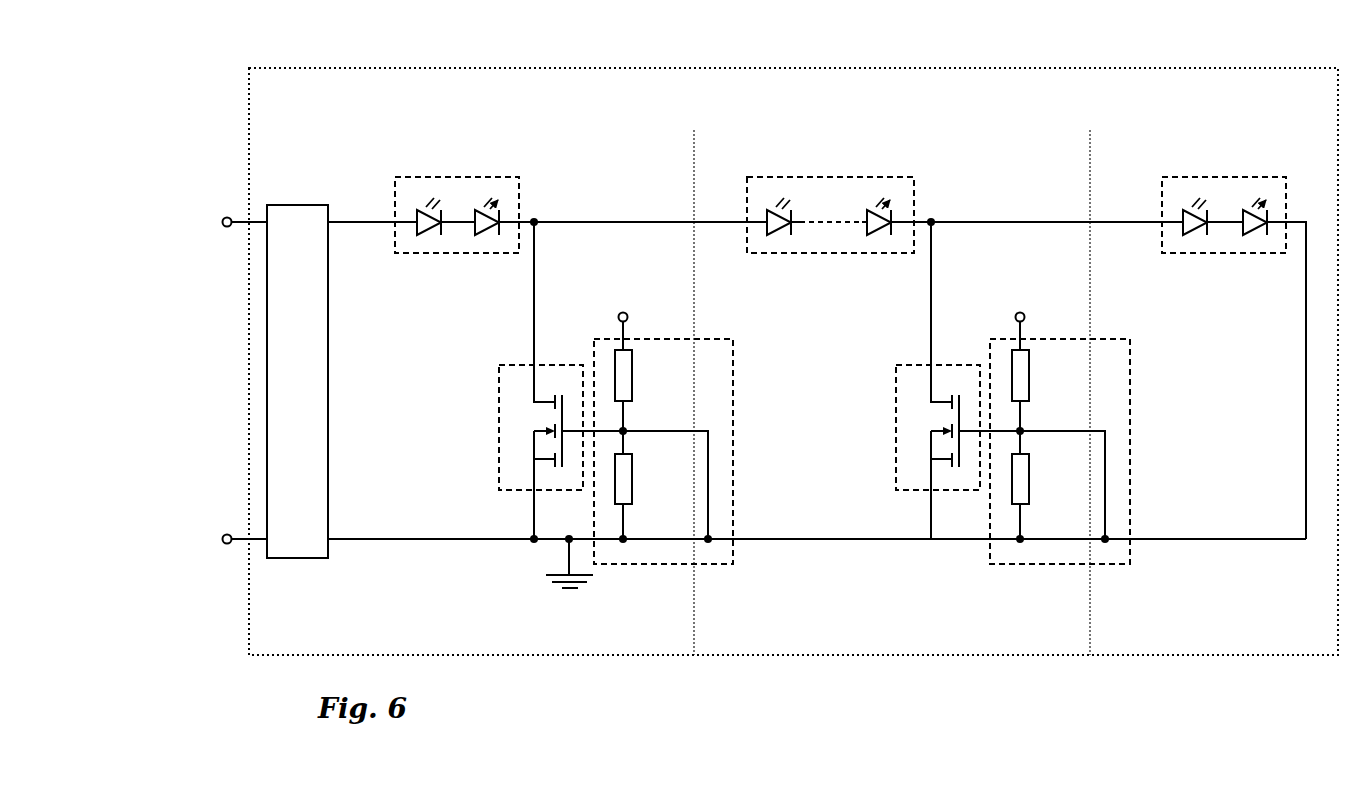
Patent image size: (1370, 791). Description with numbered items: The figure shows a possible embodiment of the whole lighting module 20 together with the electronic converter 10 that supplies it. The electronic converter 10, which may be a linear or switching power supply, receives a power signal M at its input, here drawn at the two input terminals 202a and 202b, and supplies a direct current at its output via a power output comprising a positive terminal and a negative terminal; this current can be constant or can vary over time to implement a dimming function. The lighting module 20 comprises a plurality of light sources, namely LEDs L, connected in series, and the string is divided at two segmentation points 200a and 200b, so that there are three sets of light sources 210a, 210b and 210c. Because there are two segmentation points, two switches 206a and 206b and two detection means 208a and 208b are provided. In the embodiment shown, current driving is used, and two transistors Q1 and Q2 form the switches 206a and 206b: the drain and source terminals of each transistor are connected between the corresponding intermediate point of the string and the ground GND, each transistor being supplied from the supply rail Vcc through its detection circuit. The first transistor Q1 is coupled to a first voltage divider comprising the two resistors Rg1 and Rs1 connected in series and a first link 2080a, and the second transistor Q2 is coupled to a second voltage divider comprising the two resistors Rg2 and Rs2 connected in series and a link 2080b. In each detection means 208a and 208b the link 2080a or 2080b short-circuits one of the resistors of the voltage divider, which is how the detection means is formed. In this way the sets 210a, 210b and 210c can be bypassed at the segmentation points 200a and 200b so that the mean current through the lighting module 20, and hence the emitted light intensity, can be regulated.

The lighting module 20 is at (352, 66).
The electronic converter 10 is at (308, 203).
The first input terminal 202a is at (226, 213).
The second input terminal 202b is at (224, 547).
The power signal M is at (226, 283).
The first set of light sources 210a is at (477, 178).
The second set of light sources 210b is at (879, 189).
The third set of light sources 210c is at (1255, 189).
The LED L is at (488, 189).
The first switch 206a is at (575, 380).
The second switch 206b is at (972, 380).
The first transistor Q1 is at (528, 422).
The second transistor Q2 is at (925, 422).
The first detection means 208a is at (705, 417).
The second detection means 208b is at (1016, 313).
The resistor of the first voltage divider Rg1 is at (634, 349).
The resistor of the second voltage divider Rg2 is at (1031, 349).
The resistor of the first voltage divider Rs1 is at (634, 453).
The resistor of the second voltage divider Rs2 is at (1031, 453).
The first link 2080a is at (711, 479).
The second link 2080b is at (1108, 479).
The first segmentation point 200a is at (696, 658).
The second segmentation point 200b is at (1091, 658).
The supply voltage Vcc is at (619, 313).
The ground GND is at (581, 591).